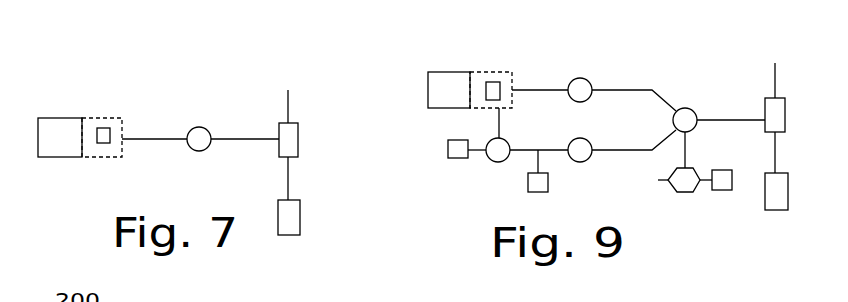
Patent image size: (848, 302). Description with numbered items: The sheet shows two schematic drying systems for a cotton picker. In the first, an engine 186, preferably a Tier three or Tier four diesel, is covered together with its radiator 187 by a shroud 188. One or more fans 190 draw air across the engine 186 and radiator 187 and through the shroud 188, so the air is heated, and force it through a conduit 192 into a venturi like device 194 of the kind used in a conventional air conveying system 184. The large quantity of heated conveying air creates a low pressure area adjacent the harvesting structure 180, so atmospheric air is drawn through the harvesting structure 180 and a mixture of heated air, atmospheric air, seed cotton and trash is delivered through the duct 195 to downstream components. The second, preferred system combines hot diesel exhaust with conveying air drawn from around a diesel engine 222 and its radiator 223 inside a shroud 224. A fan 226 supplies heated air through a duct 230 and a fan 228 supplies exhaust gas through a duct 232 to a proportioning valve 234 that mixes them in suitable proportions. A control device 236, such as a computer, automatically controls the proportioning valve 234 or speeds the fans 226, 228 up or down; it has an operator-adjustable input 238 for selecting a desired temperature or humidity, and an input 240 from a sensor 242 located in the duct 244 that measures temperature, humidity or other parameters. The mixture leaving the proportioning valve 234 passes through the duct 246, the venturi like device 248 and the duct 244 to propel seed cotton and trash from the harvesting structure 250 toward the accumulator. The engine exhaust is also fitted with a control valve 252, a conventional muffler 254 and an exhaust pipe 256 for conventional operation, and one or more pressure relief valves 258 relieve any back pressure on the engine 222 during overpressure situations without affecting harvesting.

In FIG. 7, the harvesting structure 180 is at (298, 222).
In FIG. 7, the air conveying system 184 is at (215, 111).
In FIG. 7, the engine 186 is at (68, 120).
In FIG. 7, the radiator 187 is at (117, 148).
In FIG. 7, the shroud 188 is at (112, 118).
In FIG. 7, the fan 190 is at (190, 129).
In FIG. 7, the conduit 192 is at (251, 143).
In FIG. 7, the venturi like device 194 is at (298, 145).
In FIG. 7, the duct 195 is at (289, 108).
In FIG. 9, the diesel engine 222 is at (448, 72).
In FIG. 9, the radiator 223 is at (490, 82).
In FIG. 9, the shroud 224 is at (506, 72).
In FIG. 9, the fan 226 is at (572, 79).
In FIG. 9, the fan 228 is at (577, 139).
In FIG. 9, the duct 230 is at (614, 90).
In FIG. 9, the duct 232 is at (643, 150).
In FIG. 9, the proportioning valve 234 is at (683, 108).
In FIG. 9, the control device 236 is at (677, 171).
In FIG. 9, the input 238 is at (668, 185).
In FIG. 9, the input 240 is at (690, 193).
In FIG. 9, the sensor 242 is at (732, 188).
In FIG. 9, the duct 244 is at (775, 63).
In FIG. 9, the duct 246 is at (728, 121).
In FIG. 9, the venturi like device 248 is at (765, 103).
In FIG. 9, the harvesting structure 250 is at (775, 210).
In FIG. 9, the control valve 252 is at (507, 160).
In FIG. 9, the muffler 254 is at (462, 132).
In FIG. 9, the exhaust pipe 256 is at (448, 148).
In FIG. 9, the pressure relief valve 258 is at (548, 178).